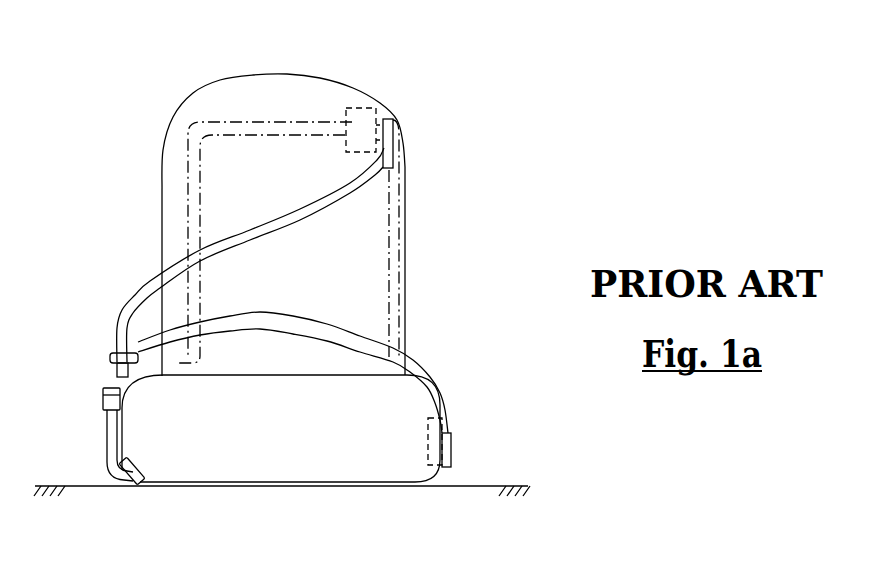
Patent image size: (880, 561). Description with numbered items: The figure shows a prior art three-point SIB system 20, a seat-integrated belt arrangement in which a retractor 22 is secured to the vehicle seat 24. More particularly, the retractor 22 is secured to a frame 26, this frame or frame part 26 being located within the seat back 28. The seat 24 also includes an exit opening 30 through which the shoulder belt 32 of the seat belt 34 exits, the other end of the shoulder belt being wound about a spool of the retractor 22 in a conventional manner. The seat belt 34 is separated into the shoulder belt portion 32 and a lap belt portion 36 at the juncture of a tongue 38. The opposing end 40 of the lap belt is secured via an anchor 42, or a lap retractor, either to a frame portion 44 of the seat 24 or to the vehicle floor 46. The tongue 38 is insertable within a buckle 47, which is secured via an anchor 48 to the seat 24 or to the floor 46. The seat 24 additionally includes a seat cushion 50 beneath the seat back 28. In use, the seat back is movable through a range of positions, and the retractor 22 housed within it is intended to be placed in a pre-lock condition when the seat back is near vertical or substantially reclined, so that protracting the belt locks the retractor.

The three-point SIB system 20 is at (208, 100).
The retractor 22 is at (355, 123).
The vehicle seat 24 is at (411, 138).
The frame 26 is at (268, 128).
The seat back 28 is at (407, 213).
The exit opening 30 is at (396, 120).
The shoulder belt 32 is at (250, 218).
The seat belt 34 is at (302, 215).
The lap belt portion 36 is at (295, 320).
The tongue 38 is at (110, 358).
The opposing end 40 is at (452, 413).
The anchor 42 is at (450, 452).
The frame portion 44 is at (428, 445).
The vehicle floor 46 is at (518, 487).
The buckle 47 is at (102, 403).
The anchor 48 is at (140, 463).
The seat cushion 50 is at (295, 470).